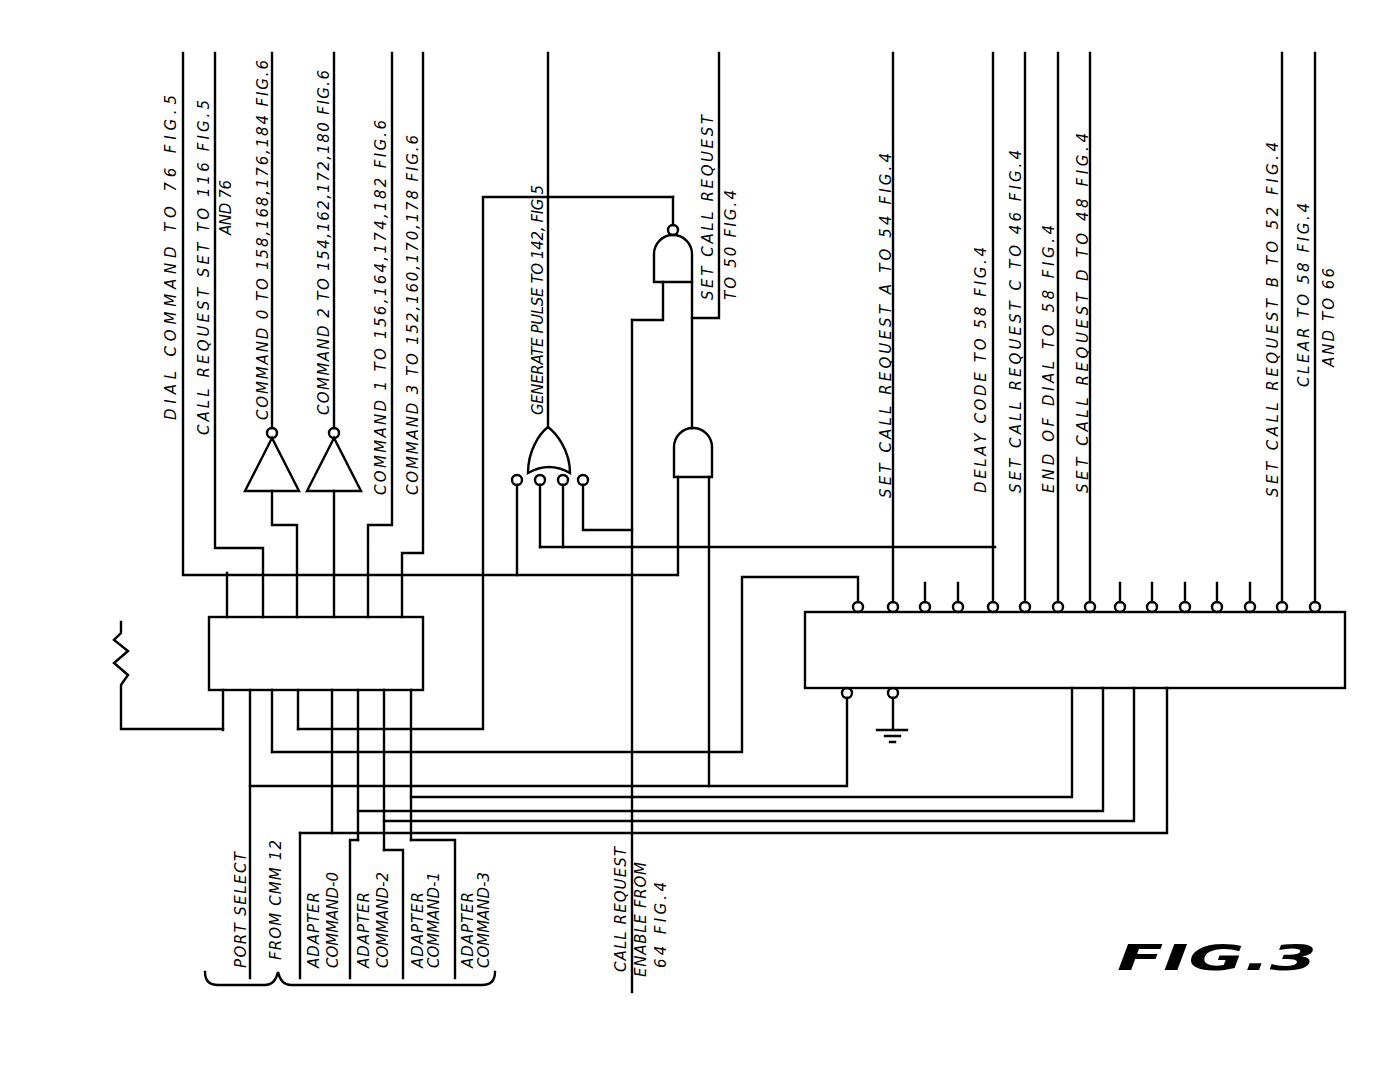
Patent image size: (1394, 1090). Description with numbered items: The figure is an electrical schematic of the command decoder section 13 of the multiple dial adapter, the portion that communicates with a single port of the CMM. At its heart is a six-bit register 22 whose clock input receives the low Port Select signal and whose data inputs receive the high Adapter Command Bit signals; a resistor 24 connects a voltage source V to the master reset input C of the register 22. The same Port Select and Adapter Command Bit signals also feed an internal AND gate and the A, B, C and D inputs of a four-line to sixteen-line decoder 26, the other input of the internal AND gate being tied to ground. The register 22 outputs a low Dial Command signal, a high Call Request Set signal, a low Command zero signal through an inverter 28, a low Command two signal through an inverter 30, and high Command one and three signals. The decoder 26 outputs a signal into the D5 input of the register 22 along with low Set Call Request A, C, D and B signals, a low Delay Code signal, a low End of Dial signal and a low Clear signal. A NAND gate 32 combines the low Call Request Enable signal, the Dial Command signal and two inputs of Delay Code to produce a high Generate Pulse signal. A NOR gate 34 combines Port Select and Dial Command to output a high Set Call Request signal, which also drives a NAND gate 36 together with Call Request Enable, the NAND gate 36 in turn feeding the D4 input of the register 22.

The command decoder section 13 is at (1190, 813).
The 6 bit register 22 is at (208, 640).
The resistor 24 is at (114, 658).
The 4-line to 16-line decoder 26 is at (1315, 688).
The inverter 28 is at (278, 494).
The inverter 30 is at (340, 494).
The NAND gate 32 is at (568, 446).
The NOR gate 34 is at (712, 440).
The NAND gate 36 is at (654, 252).